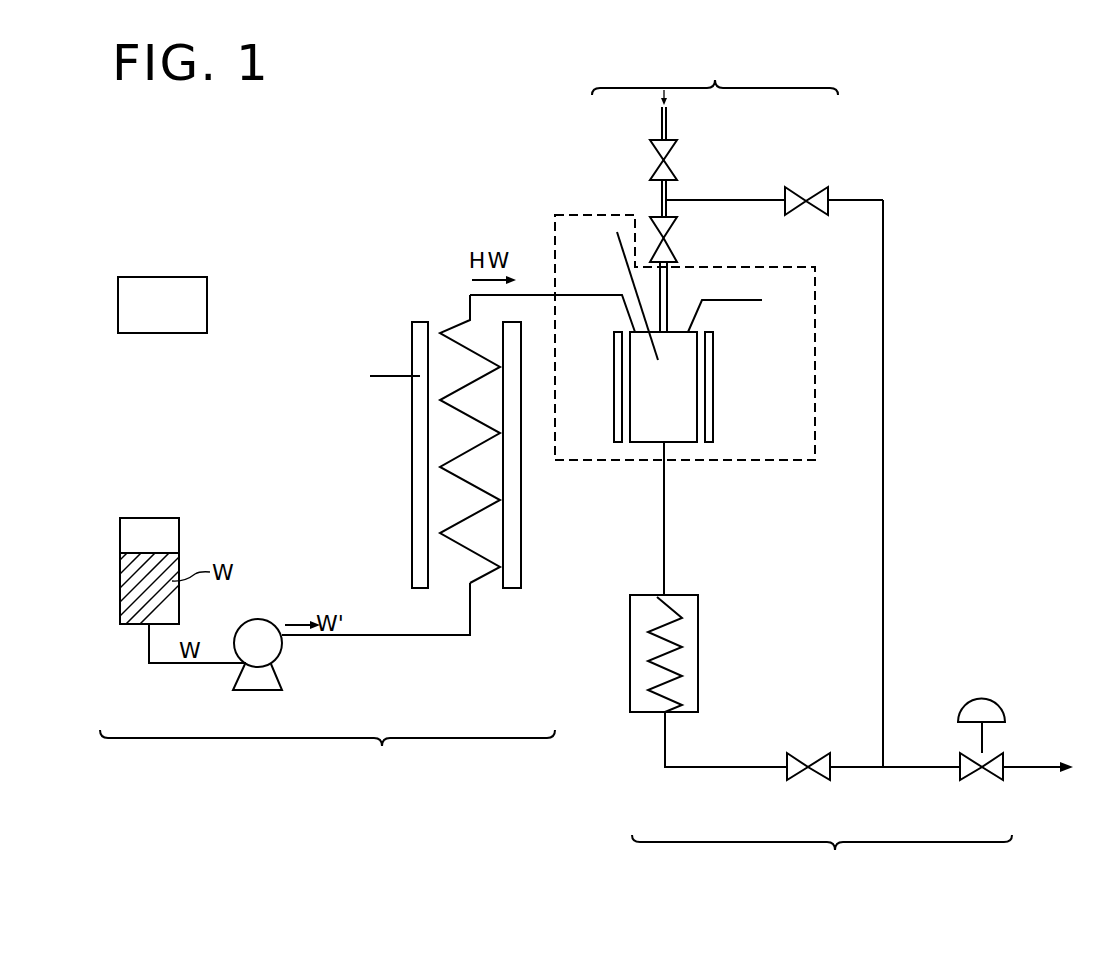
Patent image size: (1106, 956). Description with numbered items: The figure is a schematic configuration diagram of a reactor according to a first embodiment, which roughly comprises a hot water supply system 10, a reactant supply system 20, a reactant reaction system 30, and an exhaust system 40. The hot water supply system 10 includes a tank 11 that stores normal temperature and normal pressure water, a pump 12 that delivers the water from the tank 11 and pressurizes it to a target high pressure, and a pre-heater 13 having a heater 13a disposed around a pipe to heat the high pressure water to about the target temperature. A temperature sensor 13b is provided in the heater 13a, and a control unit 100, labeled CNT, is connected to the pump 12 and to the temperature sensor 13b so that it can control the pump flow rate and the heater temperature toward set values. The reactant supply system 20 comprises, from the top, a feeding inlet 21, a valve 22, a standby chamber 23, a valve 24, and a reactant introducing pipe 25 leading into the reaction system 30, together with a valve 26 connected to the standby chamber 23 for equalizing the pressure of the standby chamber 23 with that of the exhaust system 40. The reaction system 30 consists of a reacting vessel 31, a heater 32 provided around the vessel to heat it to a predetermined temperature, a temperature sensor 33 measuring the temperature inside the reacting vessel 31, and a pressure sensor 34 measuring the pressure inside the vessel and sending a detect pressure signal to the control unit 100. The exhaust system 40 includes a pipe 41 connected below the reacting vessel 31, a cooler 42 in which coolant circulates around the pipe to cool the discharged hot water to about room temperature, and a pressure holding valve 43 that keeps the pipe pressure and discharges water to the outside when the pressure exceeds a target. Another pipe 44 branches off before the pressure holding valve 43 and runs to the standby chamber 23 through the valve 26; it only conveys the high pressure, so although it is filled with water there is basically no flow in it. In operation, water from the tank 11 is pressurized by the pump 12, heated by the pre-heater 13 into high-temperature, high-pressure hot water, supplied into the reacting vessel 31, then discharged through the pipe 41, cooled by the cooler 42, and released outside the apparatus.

The hot water supply system 10 is at (327, 757).
The tank 11 is at (179, 530).
The pump 12 is at (262, 619).
The pre-heater 13 is at (441, 441).
The heater 13a is at (412, 478).
The temperature sensor 13b is at (380, 378).
The reactant supply system 20 is at (715, 72).
The feeding inlet 21 is at (661, 116).
The valve 22 is at (680, 152).
The standby chamber 23 is at (660, 200).
The valve 24 is at (680, 225).
The reactant introducing pipe 25 is at (668, 292).
The valve 26 is at (810, 187).
The reactant reaction system 30 is at (772, 462).
The reacting vessel 31 is at (682, 442).
The heater 32 is at (713, 412).
The temperature sensor 33 is at (622, 252).
The pressure sensor 34 is at (748, 303).
The exhaust system 40 is at (822, 861).
The pipe 41 is at (666, 568).
The cooler 42 is at (698, 637).
The pressure holding valve 43 is at (985, 778).
The pipe 44 is at (883, 462).
The control unit 100 is at (163, 277).